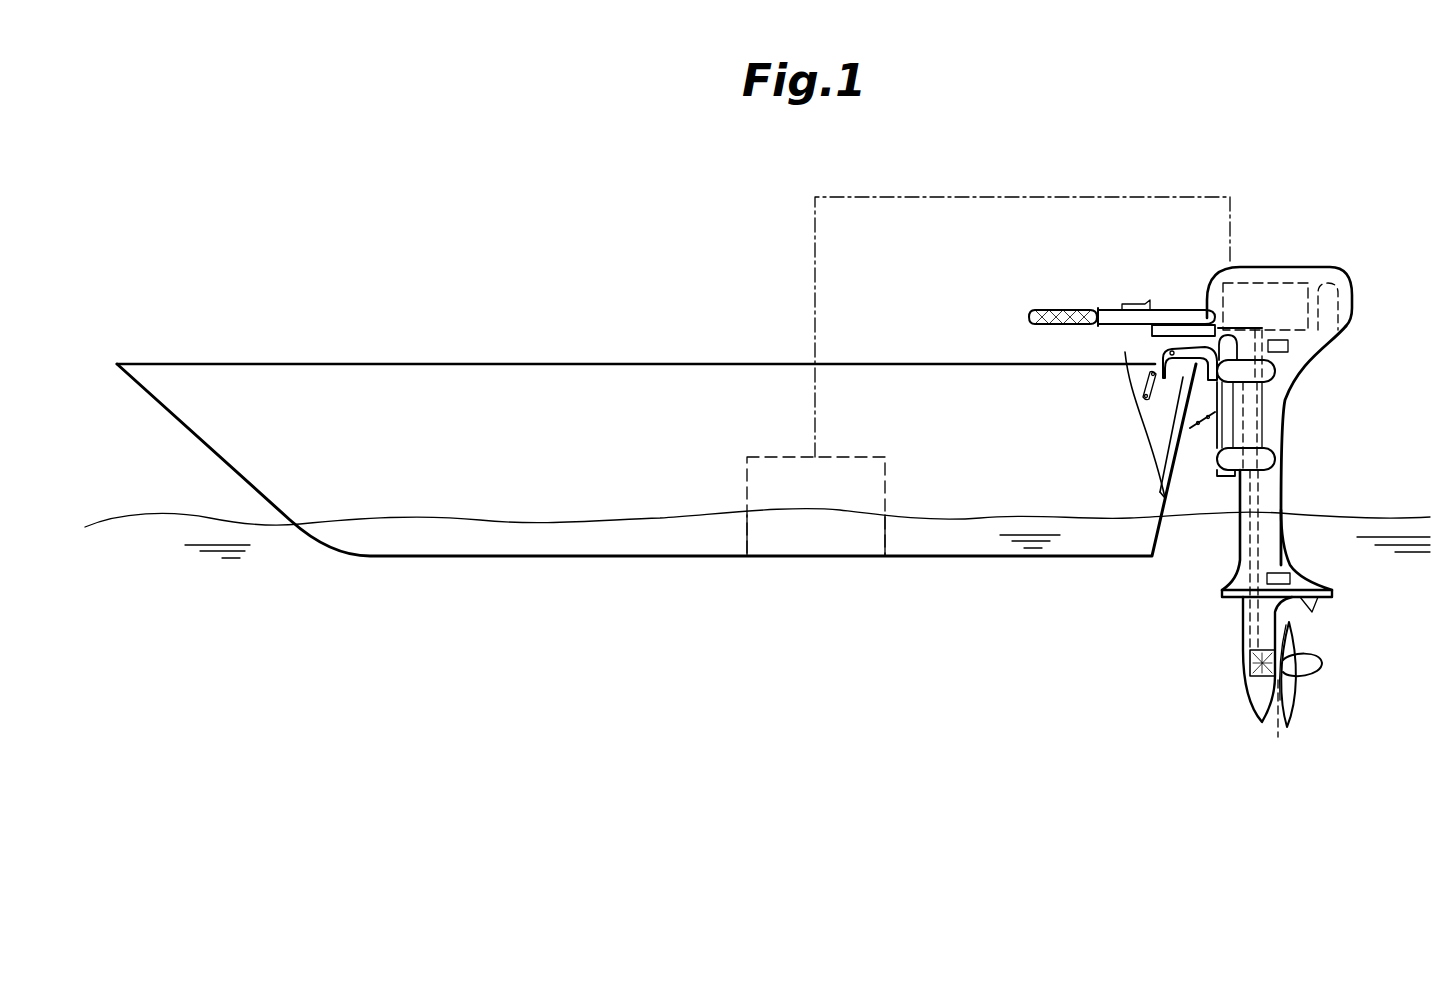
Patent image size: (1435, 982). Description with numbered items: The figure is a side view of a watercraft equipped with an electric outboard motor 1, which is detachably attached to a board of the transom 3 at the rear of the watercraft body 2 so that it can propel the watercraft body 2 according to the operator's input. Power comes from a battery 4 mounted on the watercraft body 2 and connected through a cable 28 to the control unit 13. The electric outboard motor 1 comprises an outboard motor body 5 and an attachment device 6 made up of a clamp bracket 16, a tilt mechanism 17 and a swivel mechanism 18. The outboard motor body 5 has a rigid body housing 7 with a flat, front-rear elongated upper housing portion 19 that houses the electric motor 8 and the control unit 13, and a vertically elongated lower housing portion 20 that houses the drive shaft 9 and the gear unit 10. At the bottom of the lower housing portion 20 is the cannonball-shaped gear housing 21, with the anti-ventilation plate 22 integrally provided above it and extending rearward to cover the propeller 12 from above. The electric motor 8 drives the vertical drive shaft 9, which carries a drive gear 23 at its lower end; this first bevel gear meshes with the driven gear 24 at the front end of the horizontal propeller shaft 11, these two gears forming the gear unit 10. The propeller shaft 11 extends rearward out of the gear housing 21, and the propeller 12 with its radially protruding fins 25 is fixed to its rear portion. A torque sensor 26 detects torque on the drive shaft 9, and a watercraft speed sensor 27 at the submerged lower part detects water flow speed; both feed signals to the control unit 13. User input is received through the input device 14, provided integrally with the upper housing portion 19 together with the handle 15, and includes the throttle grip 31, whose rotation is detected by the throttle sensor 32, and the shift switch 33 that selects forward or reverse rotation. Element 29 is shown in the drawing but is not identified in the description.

The electric outboard motor 1 is at (1341, 248).
The watercraft body 2 is at (702, 362).
The transom 3 is at (1153, 480).
The battery 4 is at (745, 455).
The outboard motor body 5 is at (1200, 480).
The attachment device 6 is at (1155, 407).
The body housing 7 is at (1283, 436).
The electric motor 8 is at (1295, 282).
The drive shaft 9 is at (1246, 538).
The gear unit 10 is at (1250, 670).
The propeller shaft 11 is at (1278, 722).
The propeller 12 is at (1318, 652).
The control unit 13 is at (1350, 305).
The input device 14 is at (1107, 308).
The handle 15 is at (1152, 330).
The clamp bracket 16 is at (1160, 430).
The tilt mechanism 17 is at (1162, 358).
The swivel mechanism 18 is at (1220, 436).
The upper housing portion 19 is at (1263, 282).
The lower housing portion 20 is at (1278, 482).
The gear housing 21 is at (1250, 665).
The anti-ventilation plate 22 is at (1325, 592).
The drive gear 23 is at (1248, 655).
The driven gear 24 is at (1250, 675).
The fins 25 is at (1295, 695).
The torque sensor 26 is at (1290, 346).
The watercraft speed sensor 27 is at (1285, 572).
The cable 28 is at (1105, 195).
The tiller arm 29 is at (1168, 308).
The throttle grip 31 is at (1043, 308).
The throttle sensor 32 is at (1080, 308).
The shift switch 33 is at (1128, 304).